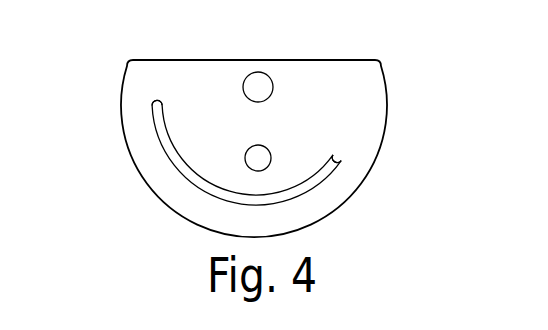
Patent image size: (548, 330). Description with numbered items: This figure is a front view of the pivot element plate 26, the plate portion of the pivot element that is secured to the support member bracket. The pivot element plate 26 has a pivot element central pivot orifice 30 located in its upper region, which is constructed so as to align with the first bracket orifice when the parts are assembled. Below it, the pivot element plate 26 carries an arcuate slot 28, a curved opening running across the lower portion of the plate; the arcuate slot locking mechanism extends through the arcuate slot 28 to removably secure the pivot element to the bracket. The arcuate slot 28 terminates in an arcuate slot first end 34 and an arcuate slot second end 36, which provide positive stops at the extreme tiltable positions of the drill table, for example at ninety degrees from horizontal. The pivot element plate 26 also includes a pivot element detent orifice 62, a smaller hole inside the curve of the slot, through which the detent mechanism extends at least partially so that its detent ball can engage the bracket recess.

The pivot element plate 26 is at (328, 87).
The arcuate slot 28 is at (320, 178).
The pivot element central pivot orifice 30 is at (243, 74).
The arcuate slot first end 34 is at (157, 107).
The arcuate slot second end 36 is at (339, 166).
The pivot element detent orifice 62 is at (245, 158).